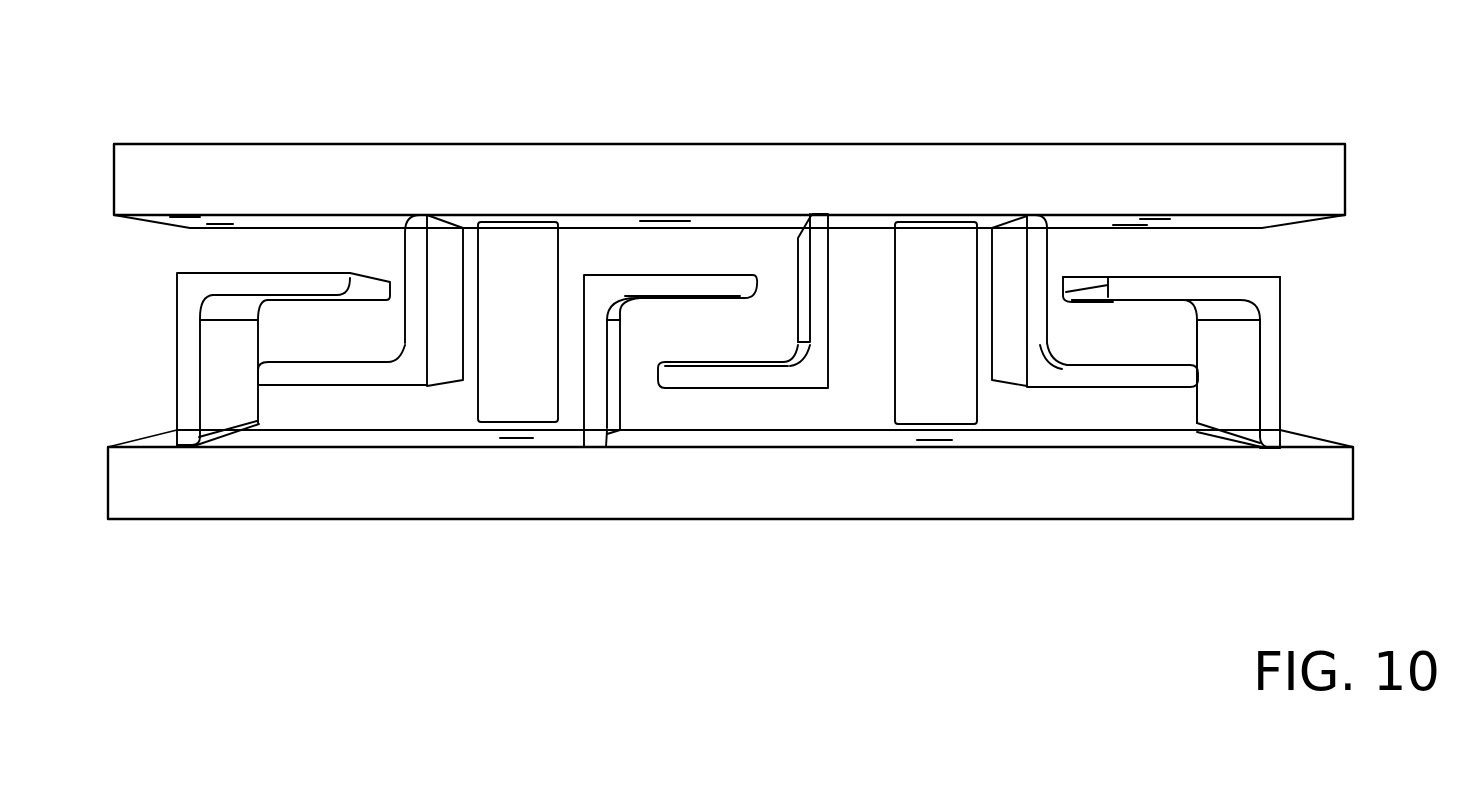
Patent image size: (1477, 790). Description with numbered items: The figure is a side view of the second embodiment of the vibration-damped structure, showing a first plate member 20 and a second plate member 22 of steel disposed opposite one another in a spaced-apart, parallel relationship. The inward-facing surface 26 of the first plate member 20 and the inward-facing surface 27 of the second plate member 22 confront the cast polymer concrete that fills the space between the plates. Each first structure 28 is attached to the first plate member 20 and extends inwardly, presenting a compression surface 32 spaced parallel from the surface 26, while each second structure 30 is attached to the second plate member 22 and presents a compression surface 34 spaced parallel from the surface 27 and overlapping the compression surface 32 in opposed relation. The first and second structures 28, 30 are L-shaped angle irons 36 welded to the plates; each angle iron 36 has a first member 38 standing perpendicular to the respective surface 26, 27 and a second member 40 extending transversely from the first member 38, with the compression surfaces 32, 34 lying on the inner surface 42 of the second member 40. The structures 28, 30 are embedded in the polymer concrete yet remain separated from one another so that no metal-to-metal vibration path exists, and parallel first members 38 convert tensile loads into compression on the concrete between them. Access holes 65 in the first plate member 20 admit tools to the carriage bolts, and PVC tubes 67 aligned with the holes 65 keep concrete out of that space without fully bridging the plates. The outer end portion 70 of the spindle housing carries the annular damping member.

The first plate member 20 is at (1302, 184).
The second plate member 22 is at (1320, 479).
The surface of the first plate member 26 is at (752, 232).
The surface of the second plate member 27 is at (820, 437).
The first structure 28 is at (822, 250).
The second structure 30 is at (597, 387).
The compression surface of the first structure 32 is at (1123, 357).
The compression surface of the second structure 34 is at (1157, 300).
The L-shaped angle iron 36 is at (1048, 373).
The first member 38 is at (1017, 247).
The second member 40 is at (1180, 287).
The inner surface 42 is at (1090, 358).
The access hole 65 is at (517, 441).
The tube 67 is at (517, 268).
The outer end portion 70 is at (1275, 343).